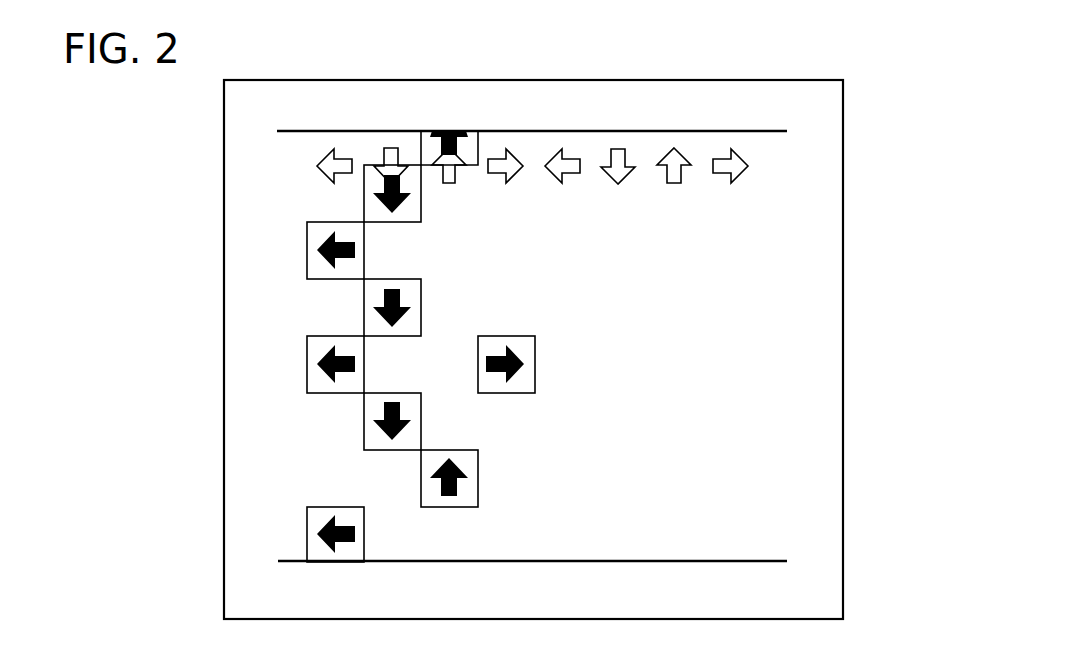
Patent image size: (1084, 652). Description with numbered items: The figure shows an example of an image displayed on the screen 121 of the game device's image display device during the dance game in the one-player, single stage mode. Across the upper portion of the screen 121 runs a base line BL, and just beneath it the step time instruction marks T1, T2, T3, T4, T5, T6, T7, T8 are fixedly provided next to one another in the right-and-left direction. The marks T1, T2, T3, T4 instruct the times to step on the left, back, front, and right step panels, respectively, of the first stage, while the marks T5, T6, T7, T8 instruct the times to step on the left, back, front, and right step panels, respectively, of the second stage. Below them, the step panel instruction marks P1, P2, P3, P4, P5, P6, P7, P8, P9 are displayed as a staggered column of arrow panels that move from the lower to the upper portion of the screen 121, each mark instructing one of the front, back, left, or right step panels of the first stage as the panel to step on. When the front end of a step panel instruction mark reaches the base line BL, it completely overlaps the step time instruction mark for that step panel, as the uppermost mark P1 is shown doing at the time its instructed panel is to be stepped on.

The screen 121 is at (843, 213).
The base line BL is at (770, 131).
The step time instruction mark T1 is at (344, 158).
The step time instruction mark T2 is at (390, 148).
The step time instruction mark T3 is at (452, 183).
The step time instruction mark T4 is at (515, 180).
The step time instruction mark T5 is at (573, 150).
The step time instruction mark T6 is at (620, 150).
The step time instruction mark T7 is at (680, 150).
The step time instruction mark T8 is at (728, 150).
The step panel instruction mark P1 is at (478, 138).
The step panel instruction mark P2 is at (421, 193).
The step panel instruction mark P3 is at (364, 250).
The step panel instruction mark P4 is at (421, 305).
The step panel instruction mark P5 is at (535, 360).
The step panel instruction mark P6 is at (364, 362).
The step panel instruction mark P7 is at (421, 417).
The step panel instruction mark P8 is at (478, 478).
The step panel instruction mark P9 is at (364, 535).